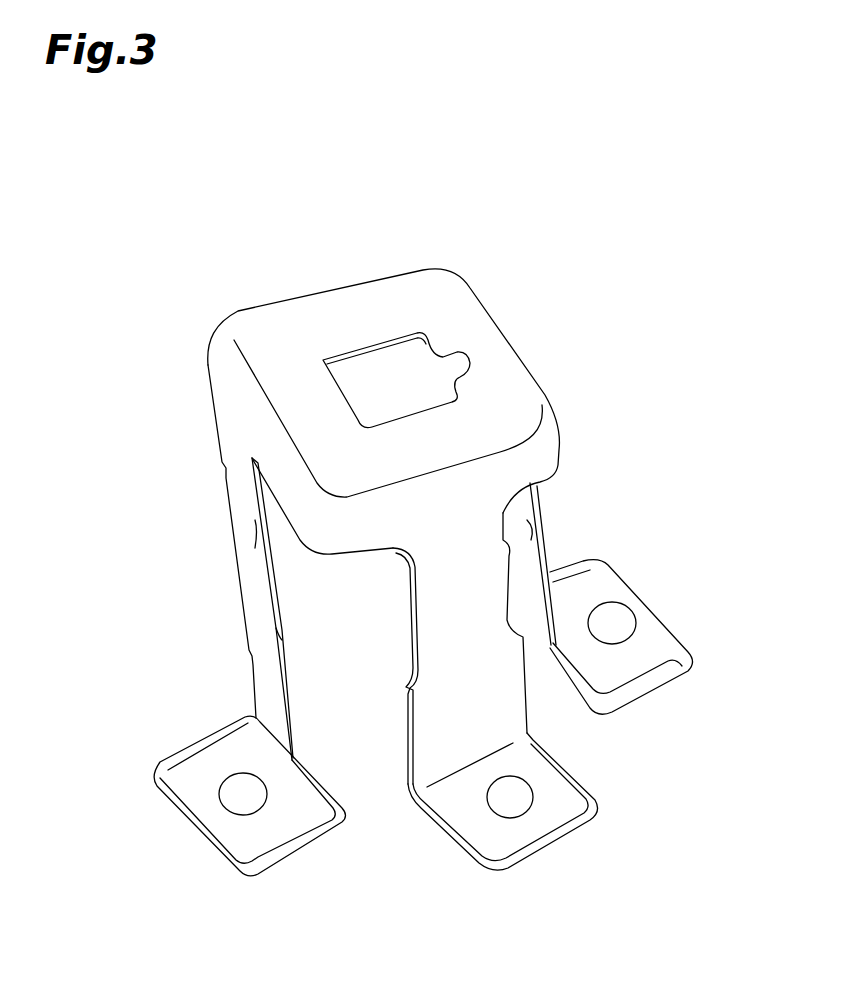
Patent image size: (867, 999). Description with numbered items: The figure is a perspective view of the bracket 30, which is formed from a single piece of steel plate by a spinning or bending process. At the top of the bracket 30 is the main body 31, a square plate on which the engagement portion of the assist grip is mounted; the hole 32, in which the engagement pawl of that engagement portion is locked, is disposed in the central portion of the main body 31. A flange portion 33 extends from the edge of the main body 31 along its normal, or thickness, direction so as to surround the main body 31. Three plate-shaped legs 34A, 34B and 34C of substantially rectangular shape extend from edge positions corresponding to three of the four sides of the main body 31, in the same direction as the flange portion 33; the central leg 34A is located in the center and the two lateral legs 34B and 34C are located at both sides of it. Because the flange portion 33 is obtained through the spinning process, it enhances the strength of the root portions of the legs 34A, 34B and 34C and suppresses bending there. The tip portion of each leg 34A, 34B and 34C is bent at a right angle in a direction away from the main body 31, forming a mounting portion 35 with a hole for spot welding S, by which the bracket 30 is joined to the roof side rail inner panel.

The bracket 30 is at (217, 230).
The main body 31 is at (398, 287).
The hole 32 is at (342, 388).
The flange portion 33 is at (322, 520).
The central leg 34A is at (435, 570).
The lateral leg 34B is at (243, 540).
The lateral leg 34C is at (540, 502).
The mounting portion 35 is at (660, 645).
The spot welding S is at (613, 600).